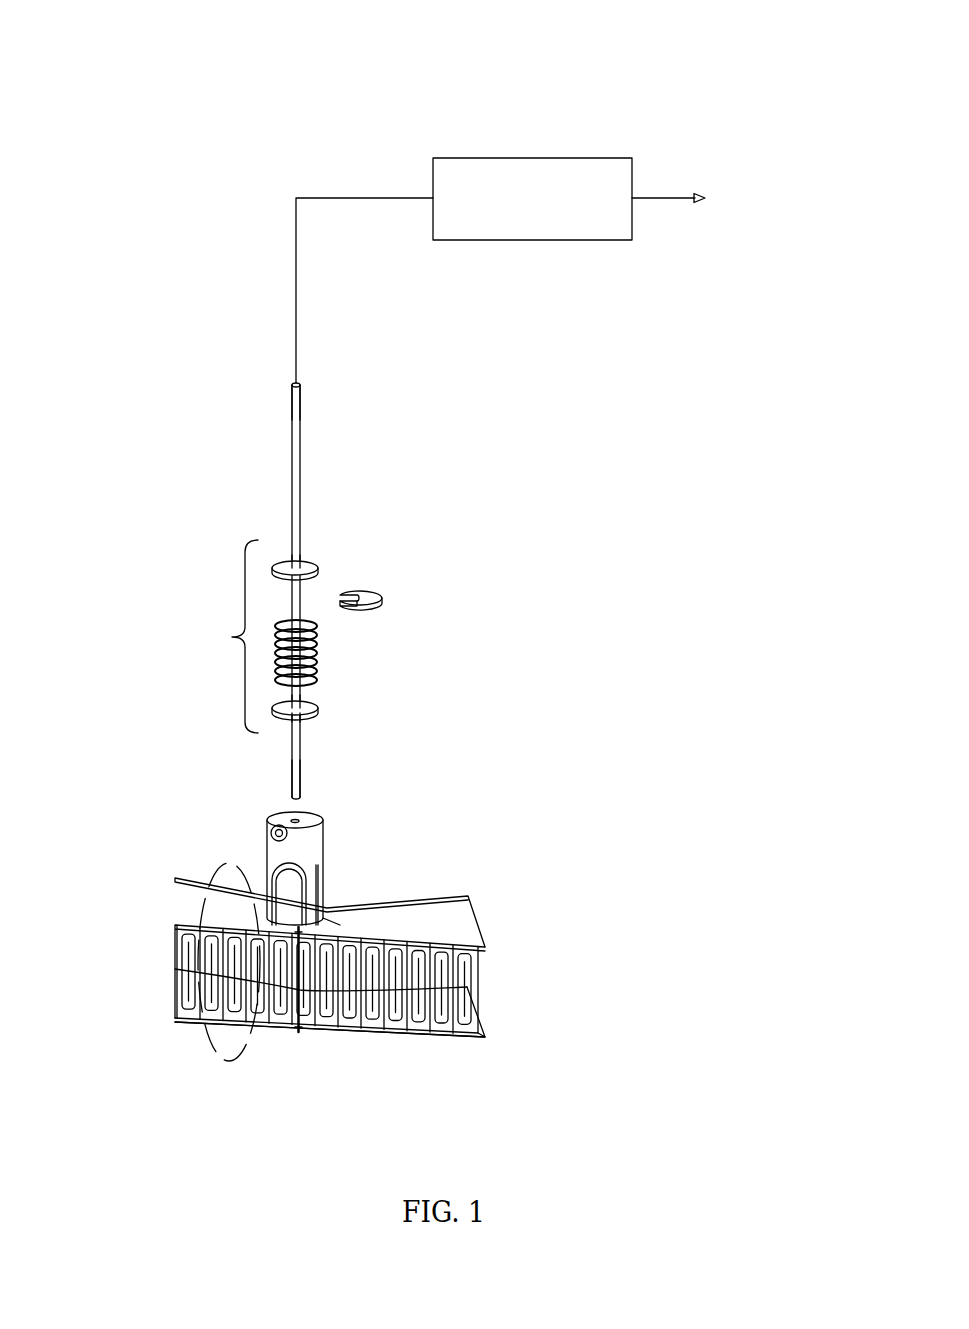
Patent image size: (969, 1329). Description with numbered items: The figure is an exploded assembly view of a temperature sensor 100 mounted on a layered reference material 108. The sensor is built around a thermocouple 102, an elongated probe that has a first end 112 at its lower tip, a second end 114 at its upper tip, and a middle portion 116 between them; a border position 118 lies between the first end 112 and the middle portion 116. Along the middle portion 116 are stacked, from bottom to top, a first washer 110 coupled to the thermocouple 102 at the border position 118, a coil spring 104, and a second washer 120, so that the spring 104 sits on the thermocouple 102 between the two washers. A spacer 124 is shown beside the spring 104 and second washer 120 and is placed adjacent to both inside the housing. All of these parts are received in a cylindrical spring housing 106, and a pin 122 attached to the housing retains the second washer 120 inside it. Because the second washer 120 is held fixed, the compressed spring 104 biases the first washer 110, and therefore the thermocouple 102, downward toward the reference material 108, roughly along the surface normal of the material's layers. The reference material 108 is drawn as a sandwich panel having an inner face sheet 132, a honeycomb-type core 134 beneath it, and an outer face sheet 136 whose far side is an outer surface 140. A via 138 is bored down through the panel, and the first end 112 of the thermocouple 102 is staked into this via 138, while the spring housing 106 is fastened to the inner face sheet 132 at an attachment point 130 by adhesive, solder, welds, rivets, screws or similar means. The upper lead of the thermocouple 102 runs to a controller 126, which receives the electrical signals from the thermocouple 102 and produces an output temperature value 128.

The temperature sensor 100 is at (682, 115).
The thermocouple 102 is at (188, 767).
The spring 104 is at (317, 640).
The spring housing 106 is at (328, 840).
The reference material 108 is at (213, 1047).
The first washer 110 is at (322, 707).
The first end 112 is at (307, 745).
The second end 114 is at (292, 432).
The middle portion 116 is at (210, 636).
The border position 118 is at (270, 703).
The second washer 120 is at (318, 563).
The pin 122 is at (267, 828).
The spacer 124 is at (385, 590).
The controller 126 is at (555, 231).
The output temperature value 128 is at (735, 213).
The attachment point 130 is at (333, 930).
The inner face sheet 132 is at (452, 927).
The core 134 is at (478, 978).
The outer face sheet 136 is at (470, 1037).
The via 138 is at (300, 1032).
The outer surface 140 is at (445, 1035).